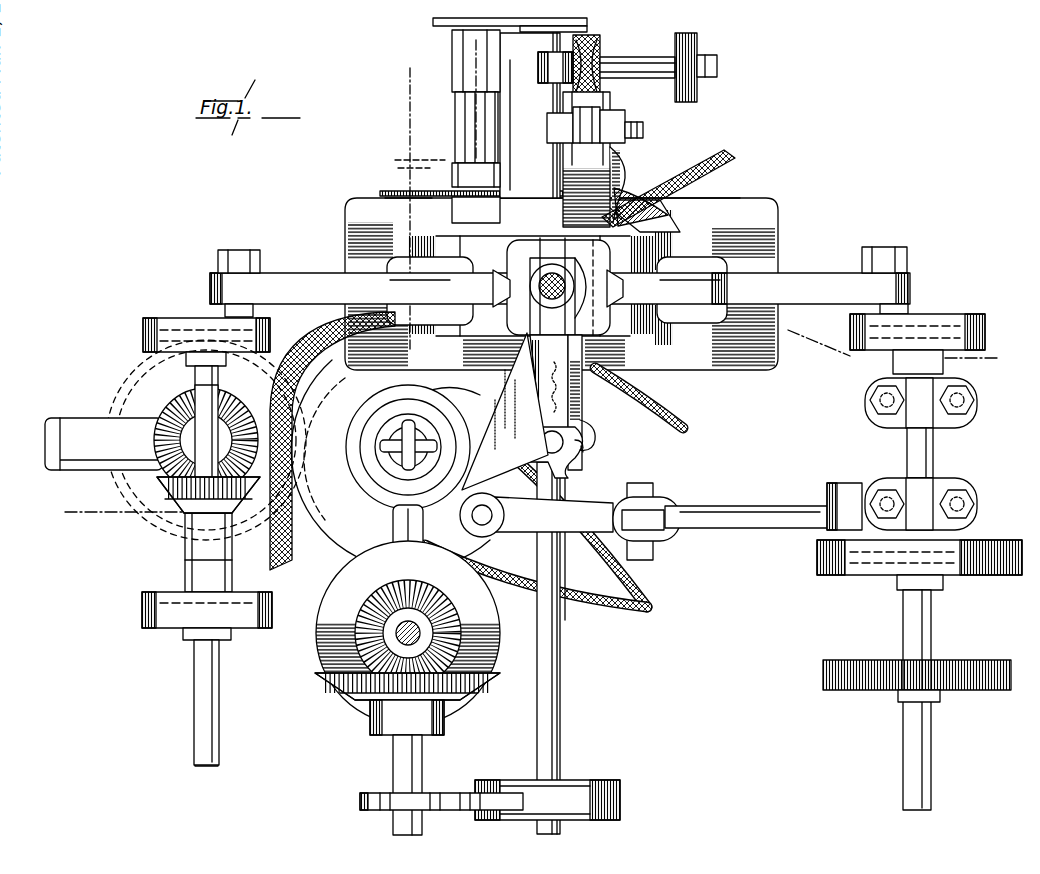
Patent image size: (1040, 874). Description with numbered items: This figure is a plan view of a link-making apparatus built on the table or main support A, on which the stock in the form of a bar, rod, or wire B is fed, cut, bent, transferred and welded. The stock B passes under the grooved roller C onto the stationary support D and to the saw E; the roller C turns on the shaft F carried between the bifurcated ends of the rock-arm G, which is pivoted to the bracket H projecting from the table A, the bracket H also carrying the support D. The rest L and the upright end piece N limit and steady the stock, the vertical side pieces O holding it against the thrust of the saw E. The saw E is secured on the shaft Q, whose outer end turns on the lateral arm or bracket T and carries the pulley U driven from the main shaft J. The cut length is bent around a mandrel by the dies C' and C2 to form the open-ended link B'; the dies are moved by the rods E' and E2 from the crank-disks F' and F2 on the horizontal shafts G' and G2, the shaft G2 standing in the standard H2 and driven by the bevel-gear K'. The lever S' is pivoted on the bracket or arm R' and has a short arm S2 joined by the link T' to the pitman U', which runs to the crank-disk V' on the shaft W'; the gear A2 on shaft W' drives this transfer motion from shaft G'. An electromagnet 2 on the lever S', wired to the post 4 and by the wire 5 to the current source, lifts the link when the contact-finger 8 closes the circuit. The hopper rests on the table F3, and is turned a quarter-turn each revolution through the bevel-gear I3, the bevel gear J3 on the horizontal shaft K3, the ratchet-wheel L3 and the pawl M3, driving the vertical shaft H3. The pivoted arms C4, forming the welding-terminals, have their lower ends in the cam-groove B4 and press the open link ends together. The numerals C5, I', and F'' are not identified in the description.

The lateral arm or bracket T is at (510, 120).
The saw or cutting-tool E is at (476, 175).
The shaft Q is at (470, 118).
The post 4 is at (406, 445).
The pulley U is at (392, 41).
The crank-disk F' is at (420, 157).
The rock-arm G is at (594, 57).
The roller C is at (601, 57).
The shaft F is at (668, 64).
The stationary support D is at (612, 116).
The bar, rod, or wire B is at (657, 123).
The bracket H is at (630, 162).
The rest L is at (638, 193).
The table or main support A is at (698, 190).
The vertical side pieces O is at (636, 220).
The rod E2 is at (280, 275).
The die C' is at (790, 280).
The die C2 is at (558, 287).
The open-ended link B' is at (569, 286).
The electromagnet 2 is at (506, 290).
The lever S' is at (549, 382).
The short arm S2 is at (566, 484).
The bracket or arm R' is at (580, 449).
The upright end piece N is at (585, 440).
The contact-finger 8 is at (595, 432).
The main shaft J is at (562, 652).
The link T' is at (536, 447).
The pitman U' is at (737, 521).
The disc C5 is at (400, 448).
The table F3 is at (379, 488).
The pivoted arms C4 is at (300, 406).
The cam-groove B4 is at (360, 360).
The crank-disk F2 is at (165, 320).
The bevel-gear K' is at (190, 566).
The handle I' is at (175, 440).
The horizontal shaft G2 is at (195, 388).
The standard H2 is at (180, 508).
The wire 5 is at (534, 429).
The rod E' is at (820, 325).
The bevel-gear I3 is at (375, 590).
The vertical shaft H3 is at (395, 632).
The bevel gear J3 is at (390, 704).
The horizontal shaft K3 is at (392, 760).
The pawl M3 is at (478, 786).
The ratchet-wheel L3 is at (360, 801).
The gear F'' is at (917, 328).
The horizontal shaft G' is at (919, 454).
The crank-disk V' is at (915, 571).
The shaft W' is at (896, 700).
The gear A2 is at (823, 676).